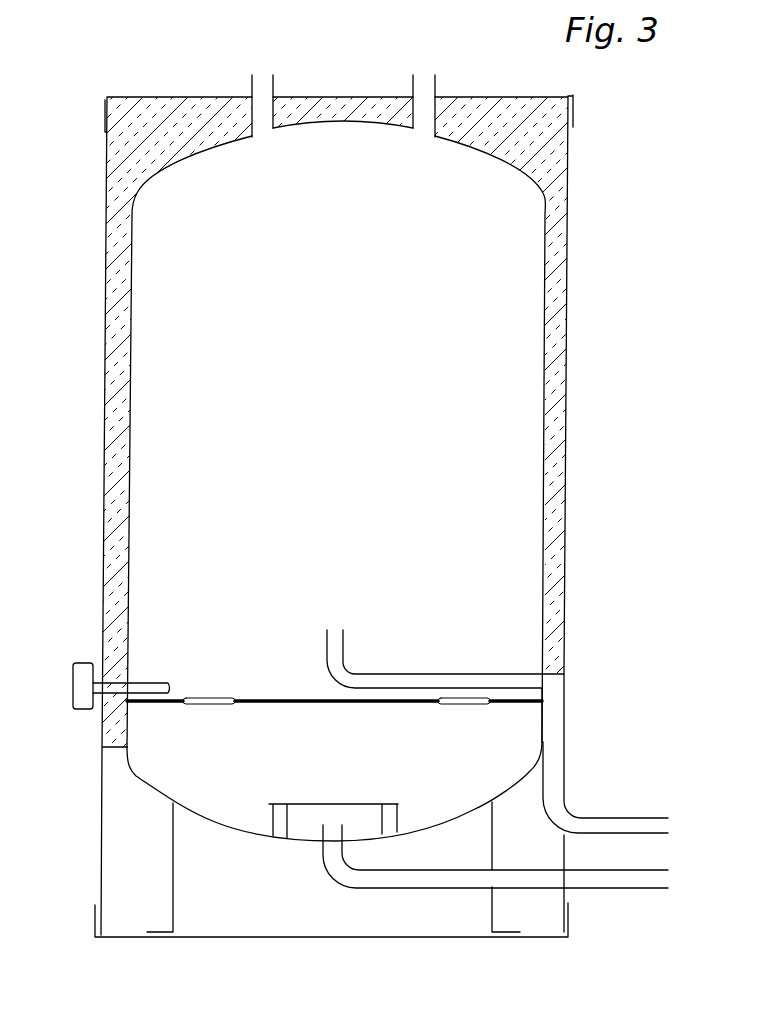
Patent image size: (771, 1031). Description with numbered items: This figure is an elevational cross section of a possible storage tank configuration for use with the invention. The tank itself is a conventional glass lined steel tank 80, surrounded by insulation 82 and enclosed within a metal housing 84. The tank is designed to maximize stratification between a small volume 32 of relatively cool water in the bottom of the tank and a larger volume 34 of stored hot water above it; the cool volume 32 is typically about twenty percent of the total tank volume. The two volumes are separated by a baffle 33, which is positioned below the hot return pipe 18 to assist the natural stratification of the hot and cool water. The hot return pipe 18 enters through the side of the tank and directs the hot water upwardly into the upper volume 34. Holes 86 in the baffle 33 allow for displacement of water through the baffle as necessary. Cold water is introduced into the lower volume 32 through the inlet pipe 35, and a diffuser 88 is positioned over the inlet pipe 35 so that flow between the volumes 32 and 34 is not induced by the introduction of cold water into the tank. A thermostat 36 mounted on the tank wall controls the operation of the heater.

The hot return pipe 18 is at (640, 818).
The small volume of relatively cool water 32 is at (505, 741).
The baffle 33 is at (157, 703).
The larger volume of stored hot water 34 is at (521, 254).
The pipe 35 is at (630, 888).
The thermostat 36 is at (73, 683).
The glass lined steel tank 80 is at (540, 343).
The insulation 82 is at (553, 408).
The metal housing 84 is at (566, 472).
The holes 86 is at (198, 703).
The diffuser 88 is at (305, 806).